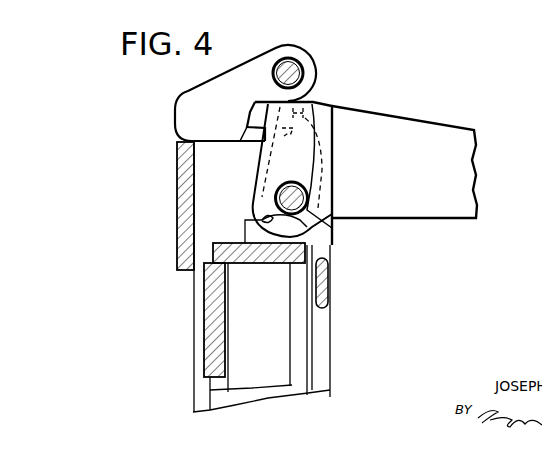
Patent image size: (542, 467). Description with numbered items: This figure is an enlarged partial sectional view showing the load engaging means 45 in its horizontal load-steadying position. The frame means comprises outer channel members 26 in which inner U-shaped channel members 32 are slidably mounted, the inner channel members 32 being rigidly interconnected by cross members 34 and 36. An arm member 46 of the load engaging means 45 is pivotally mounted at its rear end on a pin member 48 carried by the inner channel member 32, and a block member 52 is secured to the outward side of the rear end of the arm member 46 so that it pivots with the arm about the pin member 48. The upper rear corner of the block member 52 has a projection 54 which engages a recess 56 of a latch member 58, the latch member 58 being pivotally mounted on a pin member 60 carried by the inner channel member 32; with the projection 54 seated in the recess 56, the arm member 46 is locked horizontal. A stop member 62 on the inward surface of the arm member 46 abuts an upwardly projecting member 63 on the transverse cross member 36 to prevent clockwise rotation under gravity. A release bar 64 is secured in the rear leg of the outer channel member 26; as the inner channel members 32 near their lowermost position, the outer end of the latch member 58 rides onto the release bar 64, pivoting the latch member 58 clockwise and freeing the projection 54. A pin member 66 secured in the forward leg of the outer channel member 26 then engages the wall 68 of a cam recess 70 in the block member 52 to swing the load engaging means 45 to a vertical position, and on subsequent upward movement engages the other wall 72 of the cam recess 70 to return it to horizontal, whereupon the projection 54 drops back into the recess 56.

The outer channel member 26 is at (196, 398).
The inner U-shaped channel member 32 is at (300, 377).
The cross member 34 is at (212, 310).
The transverse cross member 36 is at (262, 258).
The load engaging means 45 is at (392, 238).
The arm member 46 is at (470, 174).
The pin member 48 is at (301, 183).
The block member 52 is at (334, 122).
The projection 54 is at (266, 112).
The recess 56 is at (250, 128).
The latch member 58 is at (185, 108).
The pin member 60 is at (298, 68).
The stop member 62 is at (308, 92).
The upwardly projecting member 63 is at (338, 171).
The release bar 64 is at (183, 178).
The pin member 66 is at (330, 303).
The wall 68 is at (330, 207).
The cam recess 70 is at (308, 228).
The wall 72 is at (245, 221).